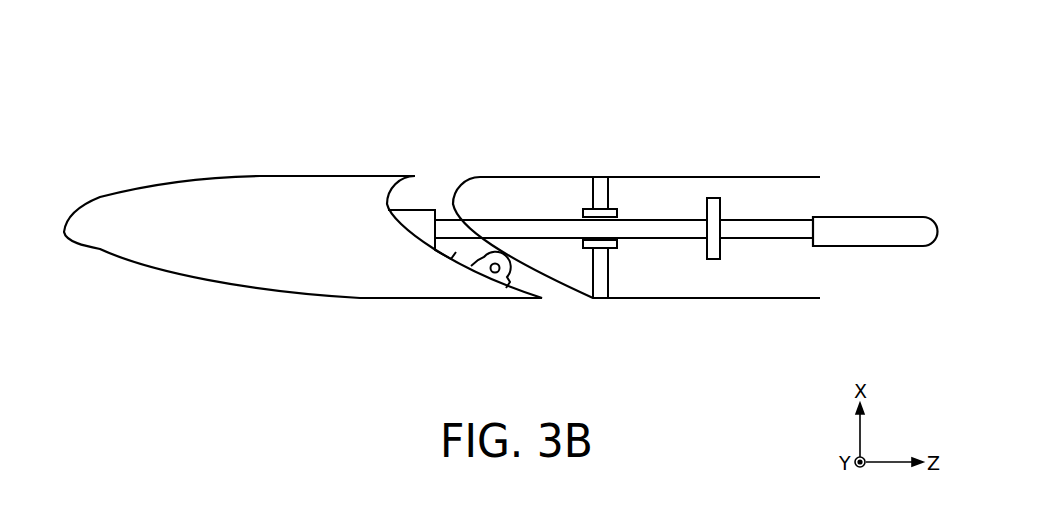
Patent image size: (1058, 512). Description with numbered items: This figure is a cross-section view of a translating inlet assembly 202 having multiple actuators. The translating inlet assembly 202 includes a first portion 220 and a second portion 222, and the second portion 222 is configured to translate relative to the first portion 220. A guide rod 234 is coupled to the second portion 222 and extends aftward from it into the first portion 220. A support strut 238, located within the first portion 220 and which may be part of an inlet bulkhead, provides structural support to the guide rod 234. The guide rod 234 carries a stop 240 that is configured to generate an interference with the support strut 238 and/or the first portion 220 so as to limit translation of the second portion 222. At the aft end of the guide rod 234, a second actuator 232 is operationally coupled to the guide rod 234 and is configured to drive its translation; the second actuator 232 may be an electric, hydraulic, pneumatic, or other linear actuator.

The translating inlet assembly 202 is at (222, 100).
The second portion 222 is at (270, 194).
The first portion 220 is at (713, 277).
The guide rod 234 is at (662, 227).
The support strut 238 is at (603, 197).
The stop 240 is at (713, 197).
The second actuator 232 is at (858, 225).